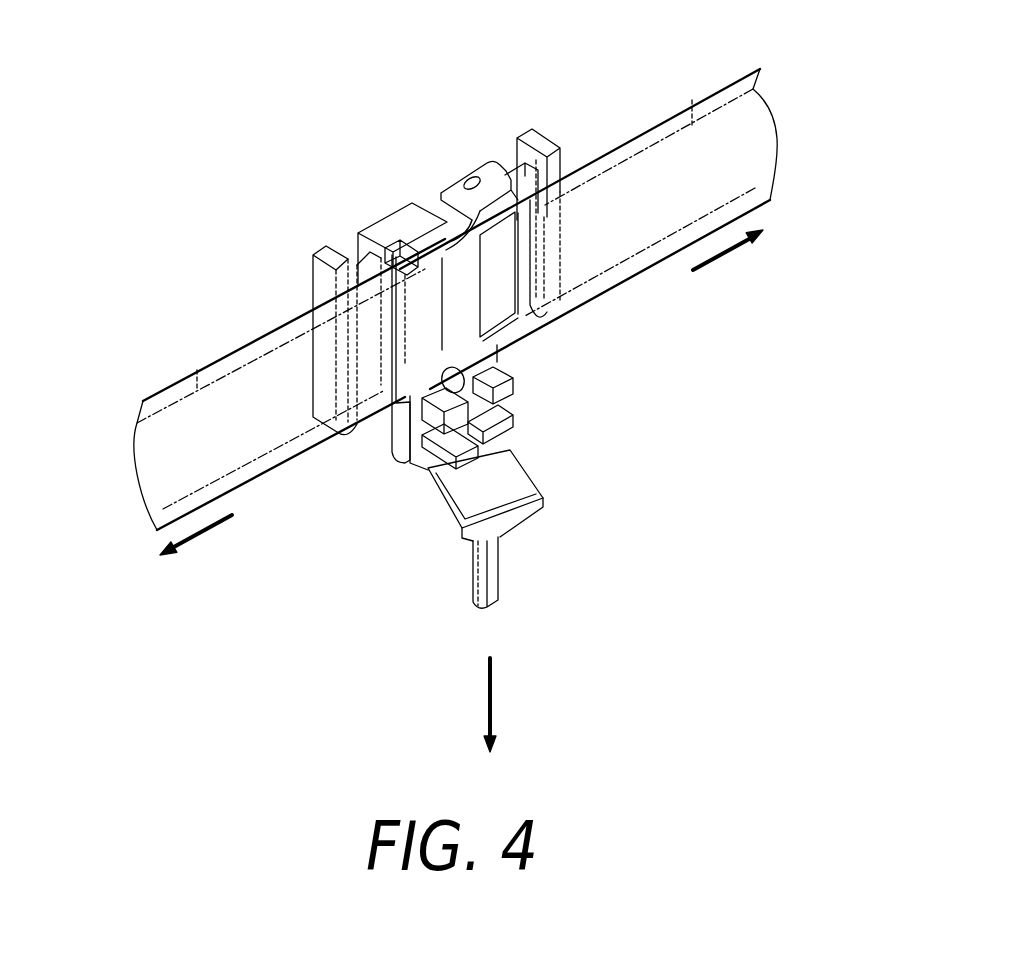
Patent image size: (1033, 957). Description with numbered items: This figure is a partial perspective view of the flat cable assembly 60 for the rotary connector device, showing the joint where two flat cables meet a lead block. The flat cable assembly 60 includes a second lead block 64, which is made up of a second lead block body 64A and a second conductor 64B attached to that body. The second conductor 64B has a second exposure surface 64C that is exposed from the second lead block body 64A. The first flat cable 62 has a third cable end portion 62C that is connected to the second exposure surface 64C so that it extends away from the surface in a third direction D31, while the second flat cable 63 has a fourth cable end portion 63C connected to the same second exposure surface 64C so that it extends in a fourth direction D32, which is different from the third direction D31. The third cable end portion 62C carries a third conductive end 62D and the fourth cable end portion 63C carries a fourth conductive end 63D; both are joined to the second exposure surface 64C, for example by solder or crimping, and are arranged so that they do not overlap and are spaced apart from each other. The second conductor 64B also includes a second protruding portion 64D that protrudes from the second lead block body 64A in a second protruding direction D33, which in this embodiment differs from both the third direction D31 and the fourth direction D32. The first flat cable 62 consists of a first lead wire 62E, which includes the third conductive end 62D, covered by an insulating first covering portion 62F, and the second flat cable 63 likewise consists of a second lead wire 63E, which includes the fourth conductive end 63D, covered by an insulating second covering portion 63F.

The flat cable assembly 60 is at (283, 88).
The first flat cable 62 is at (620, 317).
The third cable end portion 62C is at (540, 330).
The third conductive end 62D is at (497, 250).
The first lead wire 62E is at (692, 127).
The first covering portion 62F is at (622, 150).
The second flat cable 63 is at (288, 490).
The fourth cable end portion 63C is at (368, 422).
The fourth conductive end 63D is at (360, 232).
The second lead wire 63E is at (197, 387).
The second covering portion 63F is at (247, 357).
The second lead block 64 is at (477, 157).
The second lead block body 64A is at (395, 228).
The second conductor 64B is at (438, 252).
The second exposure surface 64C is at (507, 430).
The second protruding portion 64D is at (492, 585).
The third direction D31 is at (724, 258).
The fourth direction D32 is at (193, 542).
The second protruding direction D33 is at (492, 712).